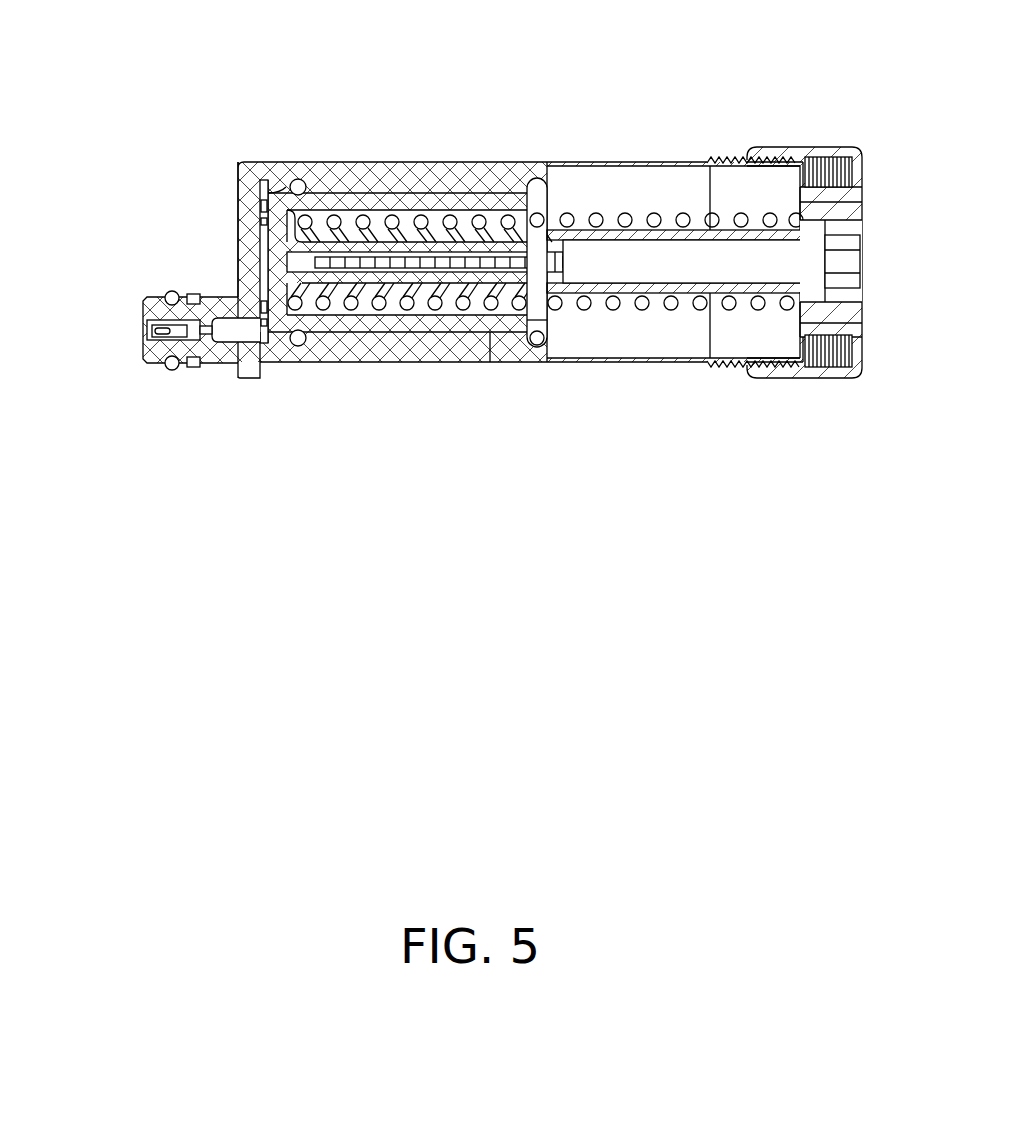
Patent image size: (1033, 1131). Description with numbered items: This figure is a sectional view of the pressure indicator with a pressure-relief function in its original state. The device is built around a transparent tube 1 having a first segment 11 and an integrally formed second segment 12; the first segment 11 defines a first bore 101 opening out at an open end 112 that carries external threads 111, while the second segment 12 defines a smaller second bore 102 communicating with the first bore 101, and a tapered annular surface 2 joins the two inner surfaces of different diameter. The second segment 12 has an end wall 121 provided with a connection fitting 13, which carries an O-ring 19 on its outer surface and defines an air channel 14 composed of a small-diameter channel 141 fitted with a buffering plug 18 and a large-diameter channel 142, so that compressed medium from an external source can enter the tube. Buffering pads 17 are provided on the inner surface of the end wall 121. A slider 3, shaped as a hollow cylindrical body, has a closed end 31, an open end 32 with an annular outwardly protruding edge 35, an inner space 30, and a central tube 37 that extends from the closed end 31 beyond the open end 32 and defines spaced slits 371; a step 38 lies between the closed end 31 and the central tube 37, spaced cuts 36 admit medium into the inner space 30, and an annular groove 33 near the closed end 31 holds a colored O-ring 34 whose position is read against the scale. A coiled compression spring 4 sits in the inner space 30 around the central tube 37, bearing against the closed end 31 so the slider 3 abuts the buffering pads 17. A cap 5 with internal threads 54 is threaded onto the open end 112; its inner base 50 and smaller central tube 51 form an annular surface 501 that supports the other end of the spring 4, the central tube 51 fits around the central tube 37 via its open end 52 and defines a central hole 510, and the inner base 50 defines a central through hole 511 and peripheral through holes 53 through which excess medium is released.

The transparent tube 1 is at (368, 175).
The tapered annular surface 2 is at (507, 345).
The slider 3 is at (396, 193).
The coiled compression spring 4 is at (605, 305).
The cap 5 is at (823, 378).
The first segment 11 is at (677, 163).
The second segment 12 is at (340, 175).
The connection fitting 13 is at (153, 306).
The air channel 14 is at (165, 335).
The buffering pads 17 is at (262, 200).
The buffering plug 18 is at (170, 318).
The O-ring 19 is at (172, 370).
The inner space 30 is at (450, 215).
The closed end 31 is at (275, 257).
The open end 32 is at (597, 222).
The annular groove 33 is at (292, 190).
The colored O-ring 34 is at (300, 187).
The annular outwardly protruding edge 35 is at (538, 350).
The spaced cuts 36 is at (540, 340).
The central tube 37 is at (390, 305).
The step 38 is at (305, 335).
The inner base 50 is at (825, 297).
The central tube 51 is at (730, 235).
The open end 52 is at (535, 200).
The peripheral through holes 53 is at (820, 350).
The internal threads 54 is at (847, 177).
The first bore 101 is at (655, 200).
The second bore 102 is at (442, 190).
The external threads 111 is at (735, 158).
The open end 112 is at (775, 185).
The end wall 121 is at (243, 240).
The small-diameter channel 141 is at (160, 365).
The large-diameter channel 142 is at (235, 340).
The spaced slits 371 is at (447, 275).
The annular surface 501 is at (800, 195).
The central hole 510 is at (662, 275).
The central through hole 511 is at (813, 267).